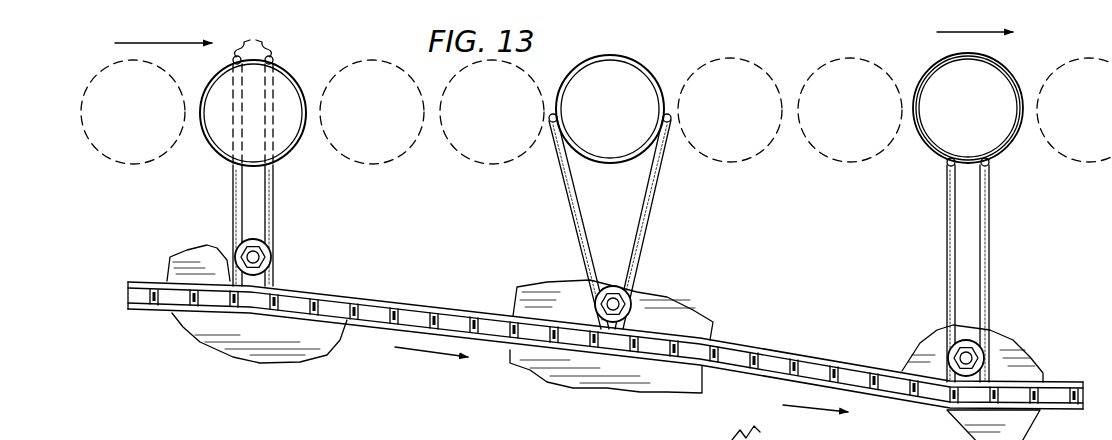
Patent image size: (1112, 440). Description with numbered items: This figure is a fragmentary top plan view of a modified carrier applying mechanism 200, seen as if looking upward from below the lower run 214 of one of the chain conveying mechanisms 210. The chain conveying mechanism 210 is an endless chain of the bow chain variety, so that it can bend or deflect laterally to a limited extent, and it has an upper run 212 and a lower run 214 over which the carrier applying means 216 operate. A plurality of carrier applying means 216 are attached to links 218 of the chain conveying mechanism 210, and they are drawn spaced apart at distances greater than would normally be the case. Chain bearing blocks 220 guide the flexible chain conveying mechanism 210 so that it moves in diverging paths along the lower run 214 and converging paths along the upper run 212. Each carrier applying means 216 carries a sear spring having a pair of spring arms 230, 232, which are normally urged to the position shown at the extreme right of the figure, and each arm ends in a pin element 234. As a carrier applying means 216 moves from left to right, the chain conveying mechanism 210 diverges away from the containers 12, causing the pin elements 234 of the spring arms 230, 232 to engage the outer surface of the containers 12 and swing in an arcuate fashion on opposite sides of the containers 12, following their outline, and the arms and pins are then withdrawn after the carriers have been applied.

The container 12 is at (710, 98).
The carrier applying mechanism 200 is at (197, 345).
The chain conveying mechanism 210 is at (392, 334).
The upper run 212 is at (605, 368).
The lower run 214 is at (122, 300).
The carrier applying means 216 is at (277, 252).
The chain link 218 is at (413, 313).
The chain bearing block 220 is at (672, 318).
The spring arm 230 is at (232, 200).
The spring arm 232 is at (272, 207).
The pin element 234 is at (254, 41).